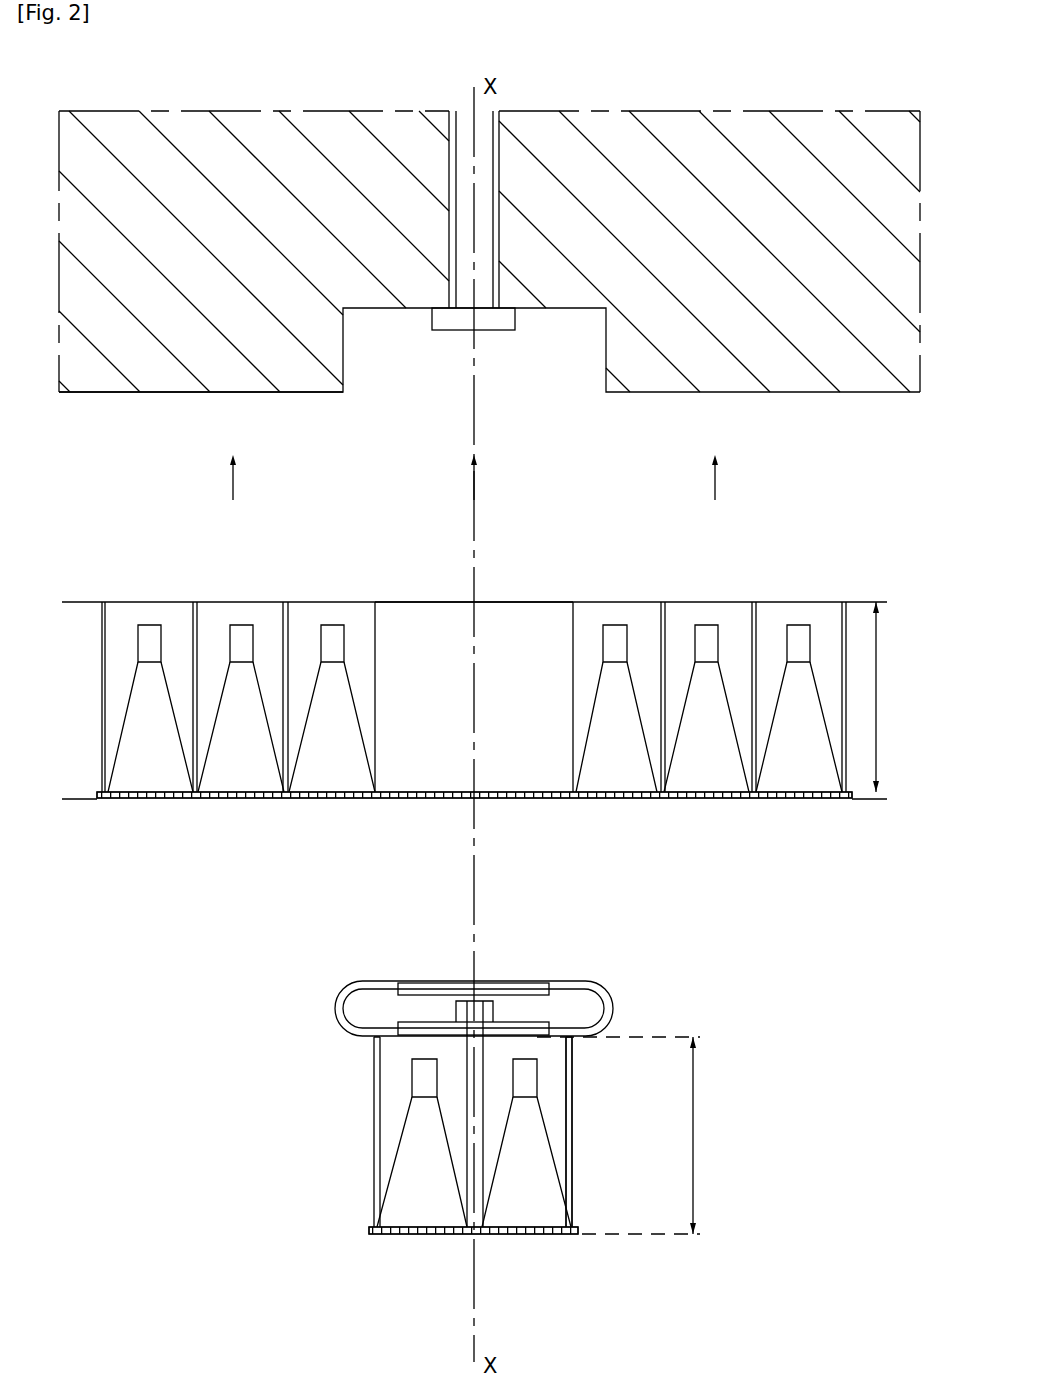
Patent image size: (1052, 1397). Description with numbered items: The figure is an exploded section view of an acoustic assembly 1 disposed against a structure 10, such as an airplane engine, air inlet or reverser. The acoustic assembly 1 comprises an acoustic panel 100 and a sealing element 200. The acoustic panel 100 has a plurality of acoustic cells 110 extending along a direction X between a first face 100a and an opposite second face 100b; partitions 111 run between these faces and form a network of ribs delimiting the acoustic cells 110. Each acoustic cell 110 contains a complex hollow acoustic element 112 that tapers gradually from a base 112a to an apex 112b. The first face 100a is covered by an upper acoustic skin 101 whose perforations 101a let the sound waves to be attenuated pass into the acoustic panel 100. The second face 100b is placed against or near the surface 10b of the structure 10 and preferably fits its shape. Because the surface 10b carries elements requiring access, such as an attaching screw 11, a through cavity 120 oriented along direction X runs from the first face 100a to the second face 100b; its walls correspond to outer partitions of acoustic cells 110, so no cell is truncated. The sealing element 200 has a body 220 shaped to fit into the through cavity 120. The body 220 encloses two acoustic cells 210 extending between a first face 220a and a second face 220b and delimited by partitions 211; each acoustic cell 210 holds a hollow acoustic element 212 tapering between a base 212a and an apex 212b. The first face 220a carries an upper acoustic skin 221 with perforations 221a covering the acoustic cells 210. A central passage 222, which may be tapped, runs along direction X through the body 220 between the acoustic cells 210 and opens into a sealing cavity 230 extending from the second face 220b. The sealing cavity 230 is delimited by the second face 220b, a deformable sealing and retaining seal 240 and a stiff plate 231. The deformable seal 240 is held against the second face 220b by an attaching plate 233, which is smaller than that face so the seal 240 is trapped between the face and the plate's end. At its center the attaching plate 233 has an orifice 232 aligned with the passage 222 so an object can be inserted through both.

The acoustic assembly 1 is at (856, 910).
The structure 10 is at (862, 412).
The surface of the structure 10b is at (152, 393).
The attaching screw 11 is at (503, 320).
The acoustic panel 100 is at (488, 730).
The first face of the acoustic panel 100a is at (837, 800).
The second face of the acoustic panel 100b is at (808, 600).
The upper acoustic skin 101 is at (491, 829).
The perforations 101a is at (672, 800).
The acoustic cells 110 is at (446, 660).
The partitions 111 is at (280, 620).
The hollow acoustic element 112 is at (446, 708).
The base of the hollow acoustic element 112a is at (132, 790).
The apex of the hollow acoustic element 112b is at (148, 638).
The through cavity 120 is at (515, 618).
The sealing element 200 is at (567, 1120).
The acoustic cells of the sealing element 210 is at (474, 1143).
The partitions of the sealing element 211 is at (463, 1105).
The hollow acoustic element of the sealing element 212 is at (428, 1143).
The base of the hollow acoustic element 212a is at (403, 1225).
The apex of the hollow acoustic element 212b is at (423, 1073).
The body of the sealing element 220 is at (524, 1132).
The first face of the body 220a is at (567, 1235).
The second face of the body 220b is at (538, 1038).
The upper acoustic skin of the sealing element 221 is at (472, 1269).
The perforations 221a is at (435, 1235).
The passage 222 is at (477, 1152).
The sealing cavity 230 is at (422, 1002).
The stiff plate 231 is at (423, 988).
The orifice 232 is at (480, 1013).
The attaching plate 233 is at (413, 1033).
The deformable sealing and retaining seal 240 is at (600, 990).